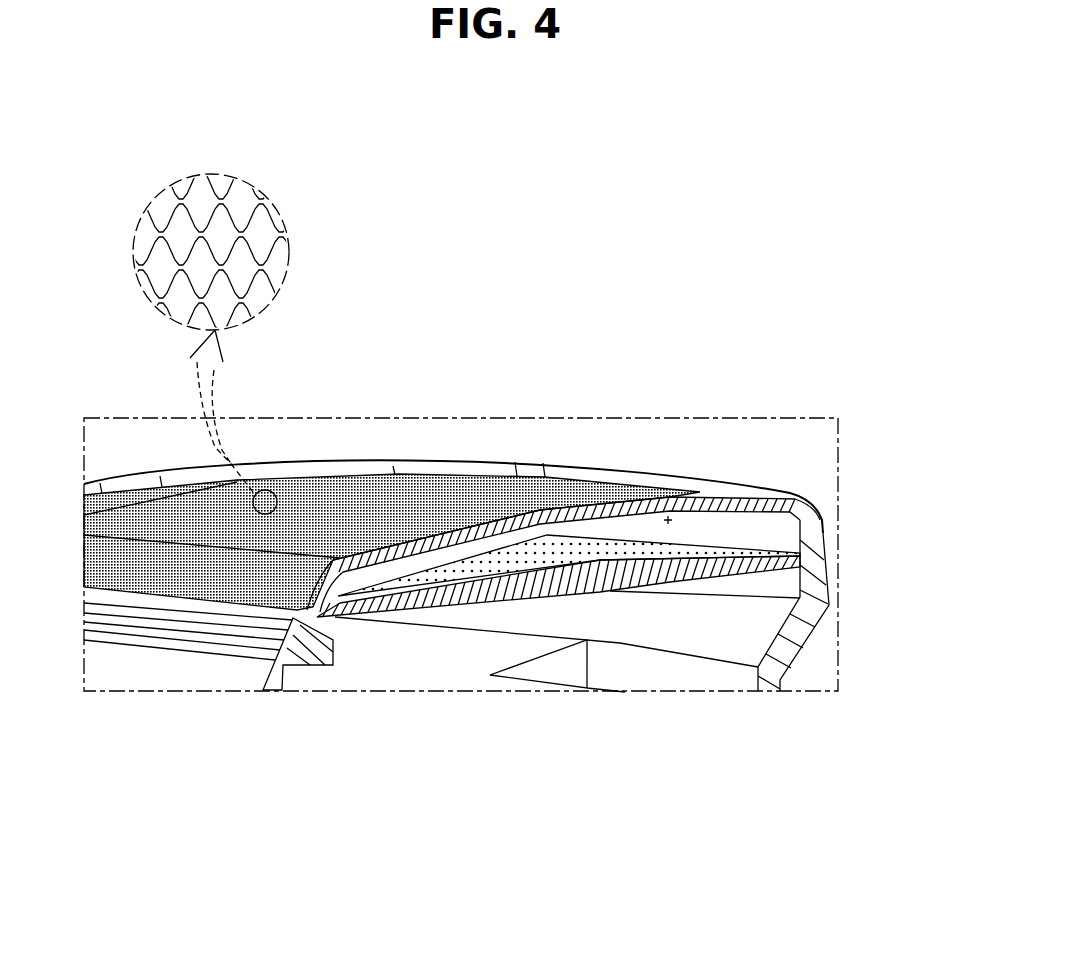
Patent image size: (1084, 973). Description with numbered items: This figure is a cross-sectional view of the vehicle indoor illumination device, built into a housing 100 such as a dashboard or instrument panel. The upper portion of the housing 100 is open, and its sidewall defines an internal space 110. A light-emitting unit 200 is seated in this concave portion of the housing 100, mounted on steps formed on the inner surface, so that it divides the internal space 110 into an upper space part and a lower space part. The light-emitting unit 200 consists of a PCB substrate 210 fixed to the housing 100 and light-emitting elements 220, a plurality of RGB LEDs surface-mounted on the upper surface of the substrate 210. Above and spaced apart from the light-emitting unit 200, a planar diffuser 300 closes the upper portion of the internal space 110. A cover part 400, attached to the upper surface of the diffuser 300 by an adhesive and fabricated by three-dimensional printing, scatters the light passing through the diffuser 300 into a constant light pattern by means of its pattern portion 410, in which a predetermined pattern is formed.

The housing 100 is at (815, 532).
The internal space 110 is at (668, 520).
The light-emitting unit 200 is at (558, 670).
The substrate 210 is at (477, 605).
The light-emitting elements 220 is at (397, 593).
The diffuser 300 is at (778, 505).
The cover part 400 is at (495, 500).
The pattern portion 410 is at (212, 178).